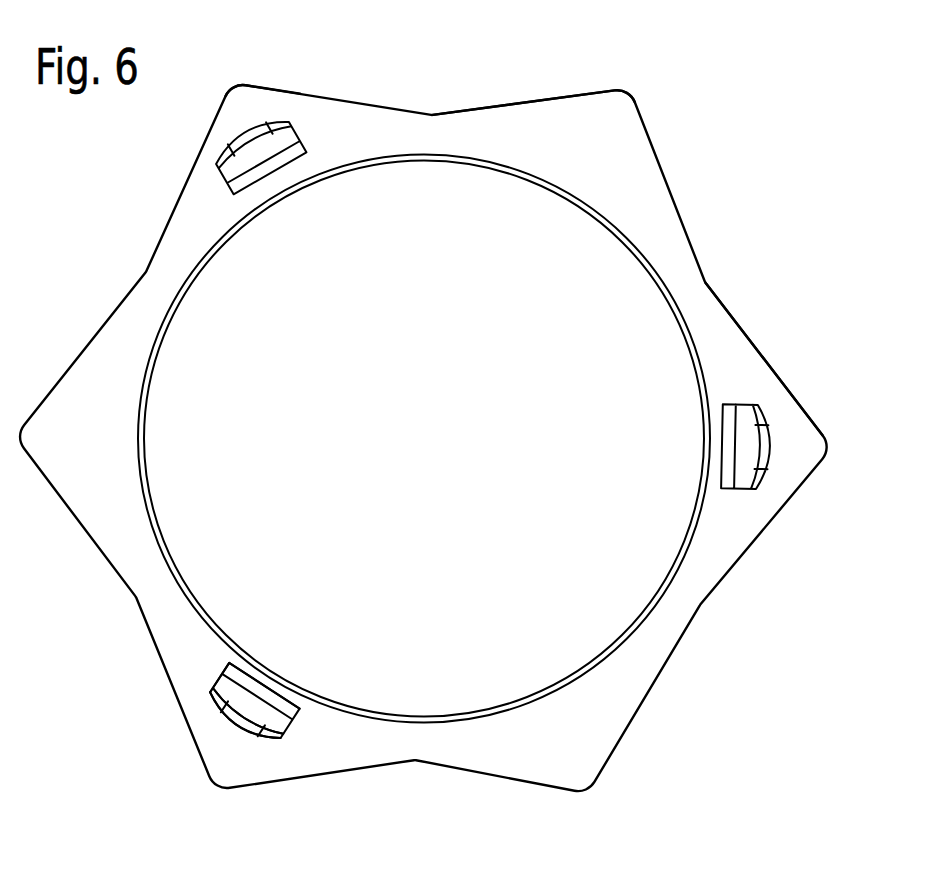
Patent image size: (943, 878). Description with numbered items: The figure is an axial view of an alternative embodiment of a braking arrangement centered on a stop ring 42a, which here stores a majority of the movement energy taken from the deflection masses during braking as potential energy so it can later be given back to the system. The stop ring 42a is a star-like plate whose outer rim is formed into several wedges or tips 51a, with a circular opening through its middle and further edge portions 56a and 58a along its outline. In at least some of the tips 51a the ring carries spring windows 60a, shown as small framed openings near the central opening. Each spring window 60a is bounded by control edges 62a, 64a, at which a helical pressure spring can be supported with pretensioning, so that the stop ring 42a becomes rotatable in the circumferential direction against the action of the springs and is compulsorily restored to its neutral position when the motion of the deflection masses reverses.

The stop ring 42a is at (680, 662).
The wedge or tip 51a is at (752, 358).
The plate tip 56a is at (270, 88).
The plate edge 58a is at (577, 88).
The spring window 60a is at (292, 145).
The control edge 62a is at (250, 662).
The control edge 64a is at (283, 717).